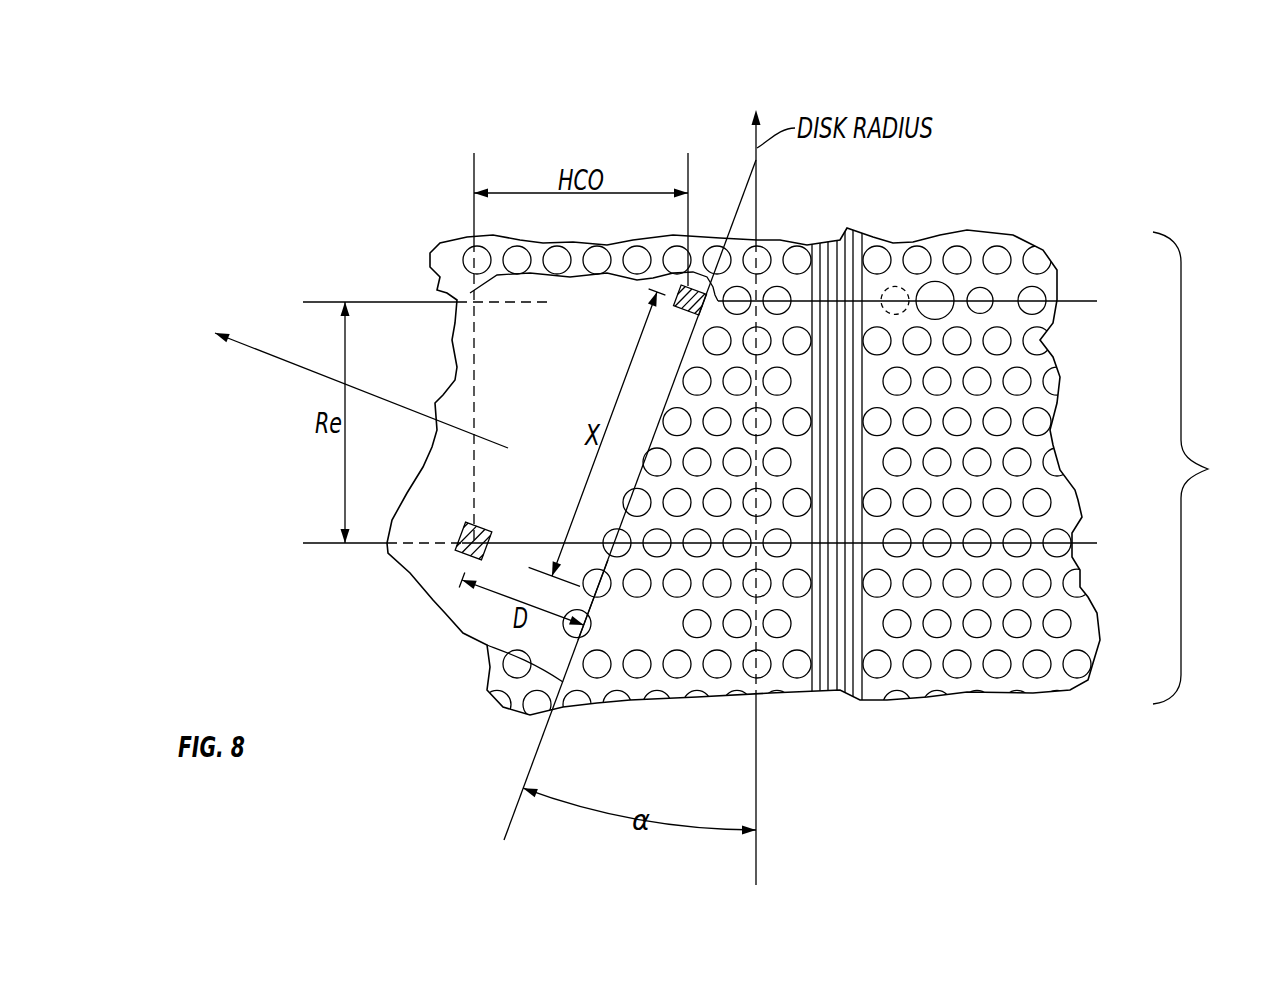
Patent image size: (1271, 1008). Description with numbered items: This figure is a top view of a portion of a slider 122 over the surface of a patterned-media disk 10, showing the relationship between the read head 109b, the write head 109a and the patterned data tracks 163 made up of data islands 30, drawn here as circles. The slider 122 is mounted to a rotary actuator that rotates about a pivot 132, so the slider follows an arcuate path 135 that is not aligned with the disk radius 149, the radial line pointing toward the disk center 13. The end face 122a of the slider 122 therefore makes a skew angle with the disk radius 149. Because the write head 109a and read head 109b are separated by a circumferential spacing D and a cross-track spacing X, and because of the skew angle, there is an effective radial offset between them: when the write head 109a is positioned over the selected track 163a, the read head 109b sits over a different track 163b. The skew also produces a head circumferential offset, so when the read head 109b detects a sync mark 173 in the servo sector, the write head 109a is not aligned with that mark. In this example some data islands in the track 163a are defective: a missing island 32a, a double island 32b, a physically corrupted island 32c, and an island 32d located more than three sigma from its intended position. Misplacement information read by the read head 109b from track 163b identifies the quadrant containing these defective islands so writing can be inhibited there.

The patterned-media disk 10 is at (1060, 360).
The disk center 13 is at (755, 379).
The data islands 30 is at (873, 670).
The missing island 32a is at (895, 286).
The double island 32b is at (935, 281).
The physically corrupted island 32c is at (980, 287).
The mislocated island 32d is at (1043, 290).
The write head 109a is at (688, 312).
The read head 109b is at (477, 522).
The slider 122 is at (430, 573).
The end face of slider 122a is at (598, 606).
The pivot 132 is at (288, 367).
The arcuate path 135 is at (516, 808).
The disk radius 149 is at (758, 855).
The patterned data tracks 163 is at (1203, 468).
The selected track 163a is at (1097, 301).
The different track 163b is at (1097, 543).
The sync mark 173 is at (840, 684).